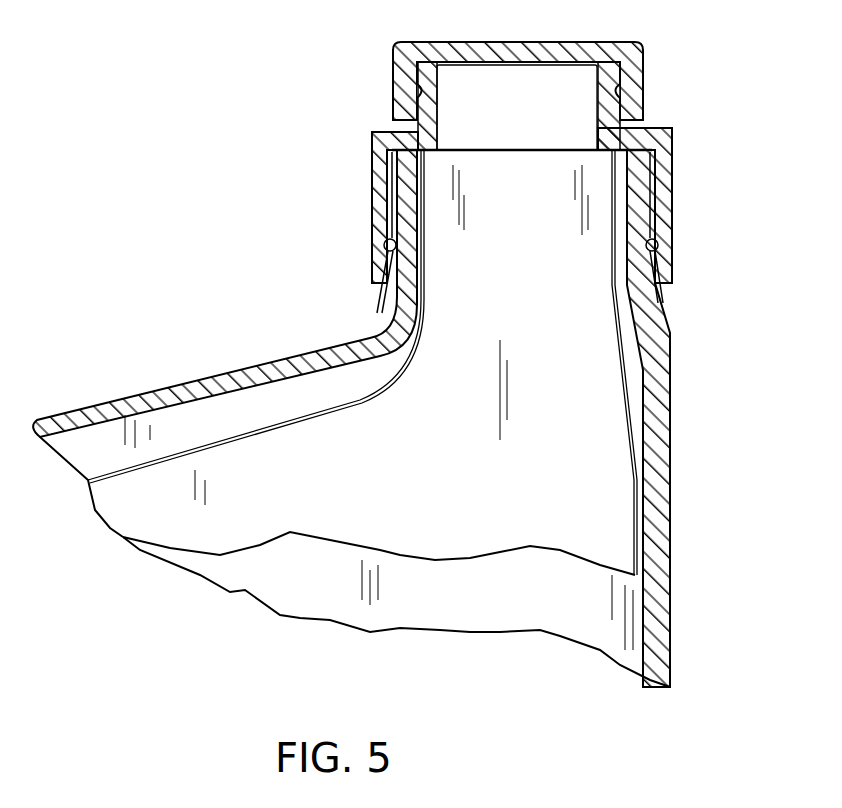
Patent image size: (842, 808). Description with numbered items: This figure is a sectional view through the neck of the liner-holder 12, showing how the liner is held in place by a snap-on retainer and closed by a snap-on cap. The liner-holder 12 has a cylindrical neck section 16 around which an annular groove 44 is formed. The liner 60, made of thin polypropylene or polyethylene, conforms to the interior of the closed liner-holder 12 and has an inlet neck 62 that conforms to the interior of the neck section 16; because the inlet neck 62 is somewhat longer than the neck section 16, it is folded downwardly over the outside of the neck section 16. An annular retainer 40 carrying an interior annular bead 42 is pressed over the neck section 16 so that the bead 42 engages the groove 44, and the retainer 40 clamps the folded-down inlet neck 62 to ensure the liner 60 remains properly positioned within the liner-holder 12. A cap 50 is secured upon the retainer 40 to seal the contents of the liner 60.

The liner-holder 12 is at (668, 415).
The neck section 16 is at (635, 203).
The annular retainer 40 is at (372, 157).
The interior annular bead 42 is at (388, 245).
The annular groove 44 is at (412, 257).
The cap 50 is at (643, 63).
The liner 60 is at (393, 380).
The inlet neck 62 is at (647, 208).